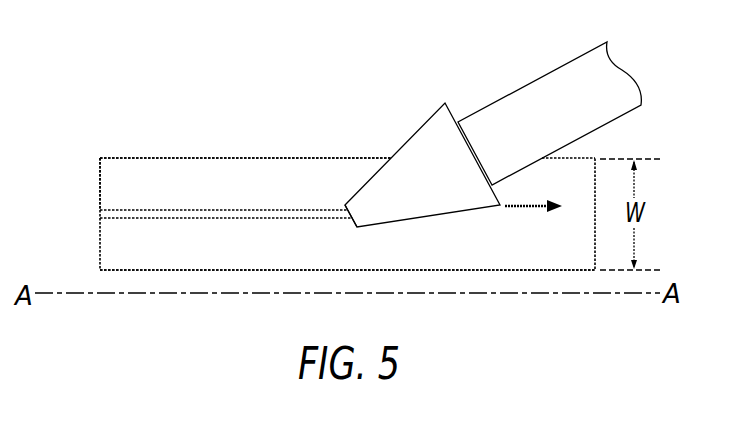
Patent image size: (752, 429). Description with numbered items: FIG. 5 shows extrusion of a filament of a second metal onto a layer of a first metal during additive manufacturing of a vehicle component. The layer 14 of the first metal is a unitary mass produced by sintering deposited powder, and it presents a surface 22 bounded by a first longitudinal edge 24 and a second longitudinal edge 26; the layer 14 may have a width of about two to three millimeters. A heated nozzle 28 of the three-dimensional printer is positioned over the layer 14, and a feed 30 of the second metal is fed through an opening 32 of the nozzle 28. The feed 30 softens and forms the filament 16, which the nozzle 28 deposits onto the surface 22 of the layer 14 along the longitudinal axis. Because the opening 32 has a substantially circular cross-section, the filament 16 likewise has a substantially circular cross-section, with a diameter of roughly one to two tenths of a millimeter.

The layer 14 is at (140, 92).
The filament 16 is at (243, 212).
The surface 22 is at (123, 188).
The first longitudinal edge 24 is at (138, 158).
The second longitudinal edge 26 is at (195, 270).
The nozzle 28 is at (415, 135).
The feed 30 is at (538, 80).
The opening 32 is at (345, 205).